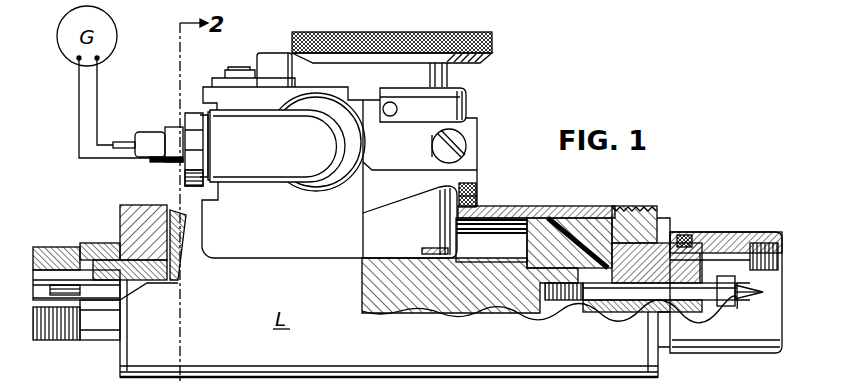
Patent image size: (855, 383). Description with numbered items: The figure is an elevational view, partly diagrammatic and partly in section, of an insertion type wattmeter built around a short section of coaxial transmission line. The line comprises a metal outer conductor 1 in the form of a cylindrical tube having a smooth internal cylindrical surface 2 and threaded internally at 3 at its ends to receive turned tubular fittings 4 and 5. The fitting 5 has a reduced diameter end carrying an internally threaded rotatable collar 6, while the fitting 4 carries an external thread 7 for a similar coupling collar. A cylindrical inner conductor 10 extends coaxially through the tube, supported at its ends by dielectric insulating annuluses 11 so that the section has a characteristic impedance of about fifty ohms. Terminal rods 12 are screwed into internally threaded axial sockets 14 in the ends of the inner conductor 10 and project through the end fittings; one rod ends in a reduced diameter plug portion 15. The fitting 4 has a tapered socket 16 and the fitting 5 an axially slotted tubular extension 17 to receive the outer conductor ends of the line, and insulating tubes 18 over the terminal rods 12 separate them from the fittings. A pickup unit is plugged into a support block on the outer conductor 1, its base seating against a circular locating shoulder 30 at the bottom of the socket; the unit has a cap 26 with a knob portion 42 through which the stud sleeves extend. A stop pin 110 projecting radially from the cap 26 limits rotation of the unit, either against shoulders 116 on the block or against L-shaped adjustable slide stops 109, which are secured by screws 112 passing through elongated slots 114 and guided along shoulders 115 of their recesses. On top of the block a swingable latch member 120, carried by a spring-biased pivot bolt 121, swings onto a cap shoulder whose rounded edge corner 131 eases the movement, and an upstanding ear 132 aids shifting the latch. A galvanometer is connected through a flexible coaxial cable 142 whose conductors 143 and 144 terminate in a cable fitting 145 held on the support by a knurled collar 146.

The metal outer conductor 1 is at (518, 208).
The smooth internal cylindrical surface 2 is at (491, 225).
The internal thread 3 is at (637, 207).
The tubular fitting 4 is at (127, 223).
The tubular fitting 5 is at (653, 232).
The rotatable collar 6 is at (748, 240).
The external thread 7 is at (56, 250).
The inner conductor 10 is at (462, 267).
The insulating annulus 11 is at (553, 223).
The terminal rod 12 is at (628, 293).
The internally threaded axial socket 14 is at (555, 300).
The reduced diameter plug portion 15 is at (743, 293).
The tapered socket 16 is at (35, 265).
The axially slotted tubular extension 17 is at (767, 268).
The insulating tube 18 is at (123, 258).
The cap 26 is at (424, 32).
The circular locating shoulder 30 is at (470, 187).
The knob portion 42 is at (480, 62).
The adjustable slide stop 109 is at (407, 165).
The stop pin 110 is at (398, 108).
The screw 112 is at (463, 140).
The elongated slot 114 is at (432, 146).
The shoulder 115 is at (463, 163).
The shoulder 116 is at (386, 90).
The swingable latch member 120 is at (216, 77).
The pivot bolt 121 is at (236, 69).
The rounded edge corner 131 is at (466, 92).
The upstanding ear 132 is at (280, 52).
The flexible coaxial cable 142 is at (155, 162).
The conductor 143 is at (79, 117).
The conductor 144 is at (97, 104).
The cable fitting 145 is at (265, 168).
The knurled collar 146 is at (326, 192).